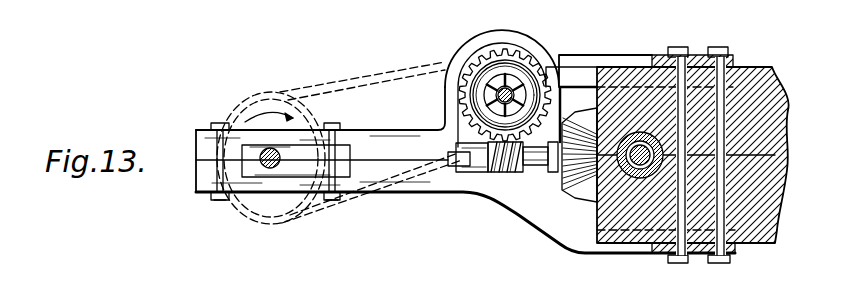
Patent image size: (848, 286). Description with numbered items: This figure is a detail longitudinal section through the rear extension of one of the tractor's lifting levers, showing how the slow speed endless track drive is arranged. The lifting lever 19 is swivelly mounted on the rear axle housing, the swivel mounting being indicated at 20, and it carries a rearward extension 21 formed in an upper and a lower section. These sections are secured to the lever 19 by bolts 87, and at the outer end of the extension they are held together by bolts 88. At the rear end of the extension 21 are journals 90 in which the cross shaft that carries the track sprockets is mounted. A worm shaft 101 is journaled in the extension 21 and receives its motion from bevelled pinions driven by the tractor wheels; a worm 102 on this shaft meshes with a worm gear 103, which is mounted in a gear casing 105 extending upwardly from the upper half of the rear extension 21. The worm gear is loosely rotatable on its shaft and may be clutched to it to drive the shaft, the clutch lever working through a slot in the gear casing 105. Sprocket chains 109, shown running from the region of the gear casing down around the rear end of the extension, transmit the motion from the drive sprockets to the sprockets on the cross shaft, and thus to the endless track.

The lifting lever 19 is at (757, 97).
The swivel mounting 20 is at (640, 133).
The rearward extension 21 is at (413, 137).
The bolts 87 is at (692, 57).
The bolts 88 is at (338, 126).
The journals 90 is at (268, 166).
The worm shaft 101 is at (472, 153).
The worm 102 is at (500, 173).
The worm gear 103 is at (525, 65).
The gear casing 105 is at (481, 45).
The sprocket chains 109 is at (362, 78).